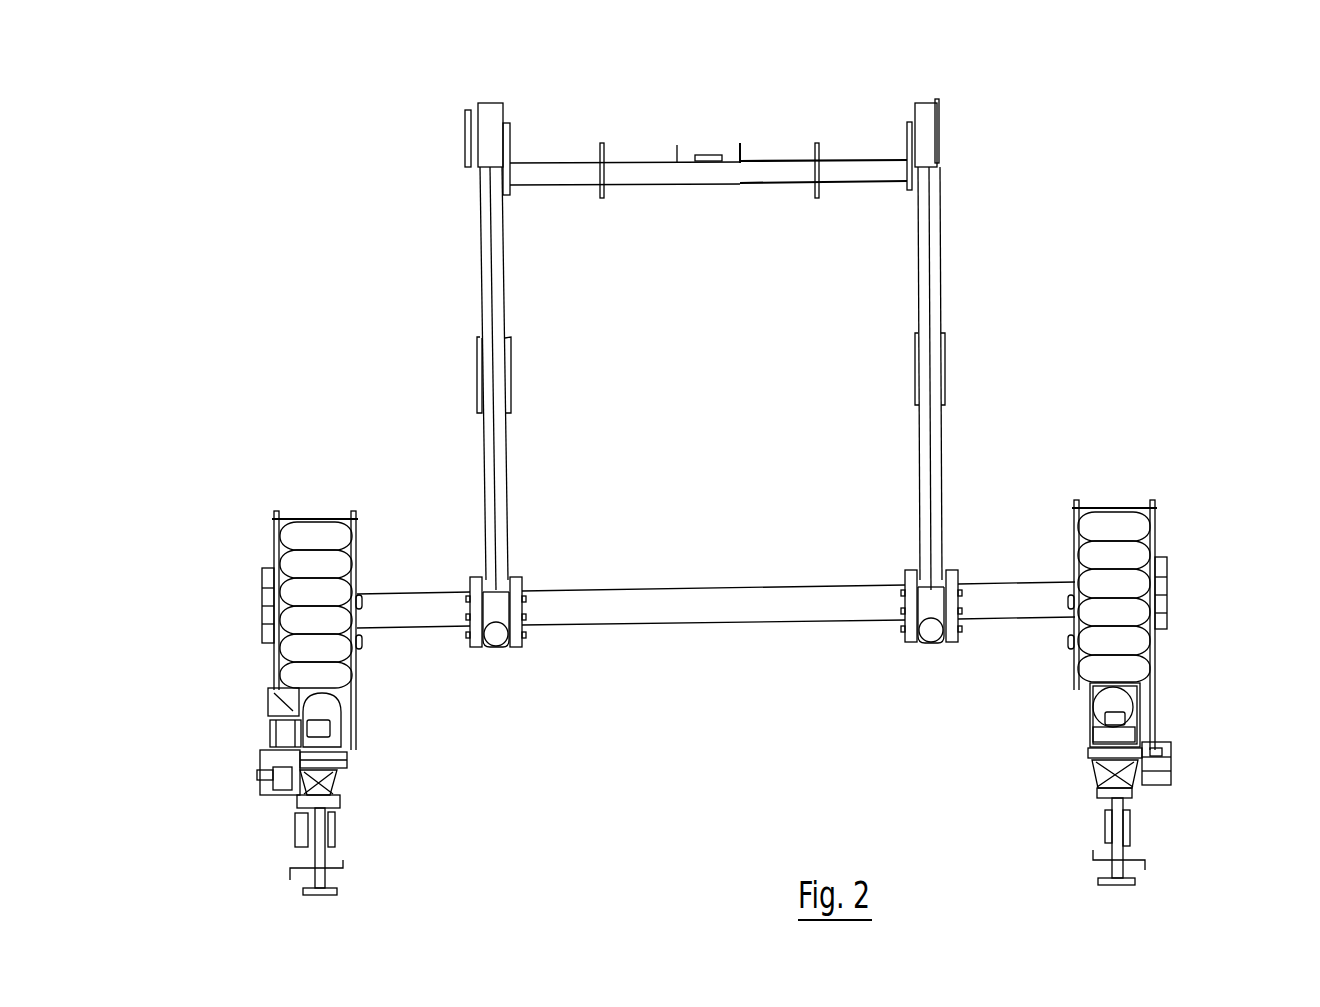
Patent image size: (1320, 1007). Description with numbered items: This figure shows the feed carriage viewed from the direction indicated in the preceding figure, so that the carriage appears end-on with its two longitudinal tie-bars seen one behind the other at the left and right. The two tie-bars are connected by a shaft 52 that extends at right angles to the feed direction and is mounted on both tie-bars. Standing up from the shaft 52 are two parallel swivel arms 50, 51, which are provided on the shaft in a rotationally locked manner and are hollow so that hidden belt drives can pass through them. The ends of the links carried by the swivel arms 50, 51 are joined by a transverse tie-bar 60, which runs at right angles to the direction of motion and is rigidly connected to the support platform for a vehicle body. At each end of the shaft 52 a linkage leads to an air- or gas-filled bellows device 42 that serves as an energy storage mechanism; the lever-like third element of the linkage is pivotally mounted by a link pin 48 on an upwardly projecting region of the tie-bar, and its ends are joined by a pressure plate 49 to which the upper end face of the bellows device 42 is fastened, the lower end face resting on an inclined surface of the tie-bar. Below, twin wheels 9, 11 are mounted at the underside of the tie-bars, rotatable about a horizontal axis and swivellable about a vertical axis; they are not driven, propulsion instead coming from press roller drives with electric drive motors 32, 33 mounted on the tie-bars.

The transverse tie-bar 60 is at (772, 169).
The swivel arm 51 is at (487, 276).
The swivel arm 50 is at (934, 264).
The shaft 52 is at (709, 600).
The bellows device 42 is at (302, 535).
The pressure plate 49 is at (338, 520).
The link pin 48 is at (270, 562).
The electric drive motor 33 is at (283, 708).
The electric drive motor 32 is at (1162, 679).
The twin wheel 11 is at (302, 808).
The twin wheel 9 is at (1125, 770).